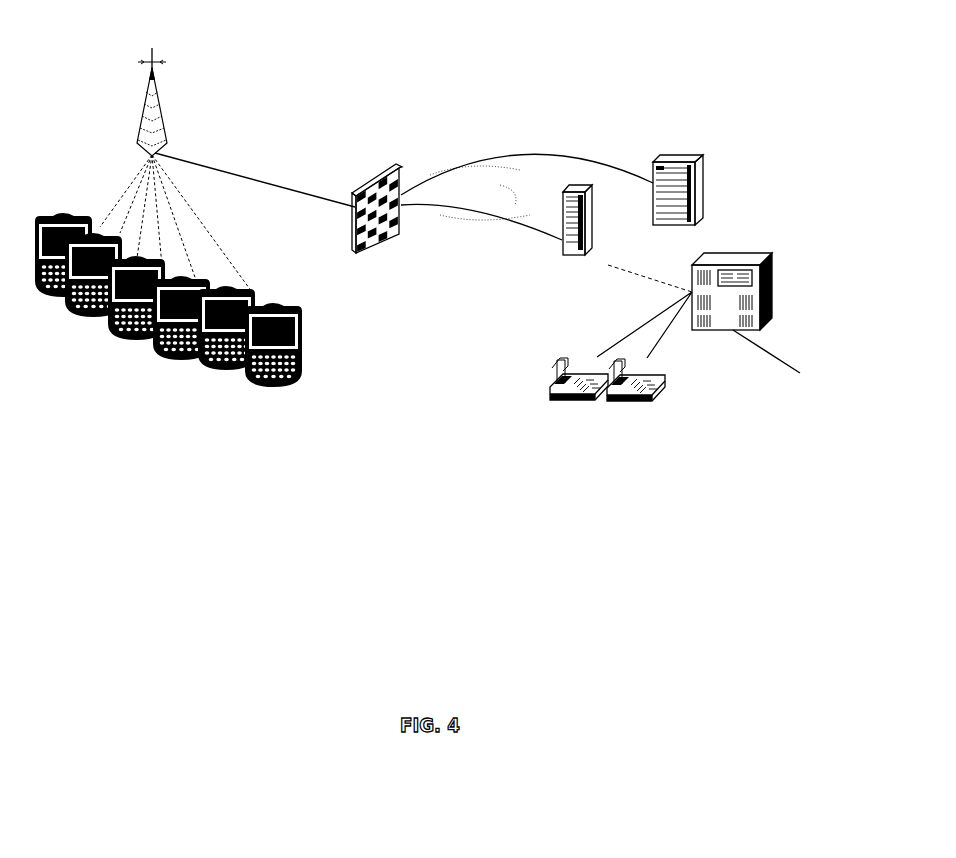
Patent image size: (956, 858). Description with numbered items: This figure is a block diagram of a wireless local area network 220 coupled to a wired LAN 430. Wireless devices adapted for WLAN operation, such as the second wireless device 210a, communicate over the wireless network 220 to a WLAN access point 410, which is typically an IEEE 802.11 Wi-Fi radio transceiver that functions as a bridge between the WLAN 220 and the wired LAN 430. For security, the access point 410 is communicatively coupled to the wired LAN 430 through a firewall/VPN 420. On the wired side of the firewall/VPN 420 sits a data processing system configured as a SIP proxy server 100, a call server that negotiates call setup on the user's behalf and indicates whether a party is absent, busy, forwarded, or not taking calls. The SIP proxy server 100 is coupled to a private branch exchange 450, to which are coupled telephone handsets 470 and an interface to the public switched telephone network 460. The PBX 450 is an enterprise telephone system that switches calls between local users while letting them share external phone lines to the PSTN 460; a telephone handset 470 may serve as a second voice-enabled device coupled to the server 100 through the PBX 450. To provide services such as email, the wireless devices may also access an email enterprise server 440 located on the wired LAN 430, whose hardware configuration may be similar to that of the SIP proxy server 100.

The WLAN access point 410 is at (172, 90).
The wireless local area network 220 is at (97, 153).
The second wireless device 210a is at (268, 387).
The firewall/VPN 420 is at (378, 152).
The wired LAN 430 is at (498, 135).
The email enterprise server 440 is at (707, 152).
The private branch exchange 450 is at (780, 275).
The public switched telephone network 460 is at (803, 402).
The telephone handset 470 is at (587, 433).
The SIP proxy server 100 is at (542, 277).